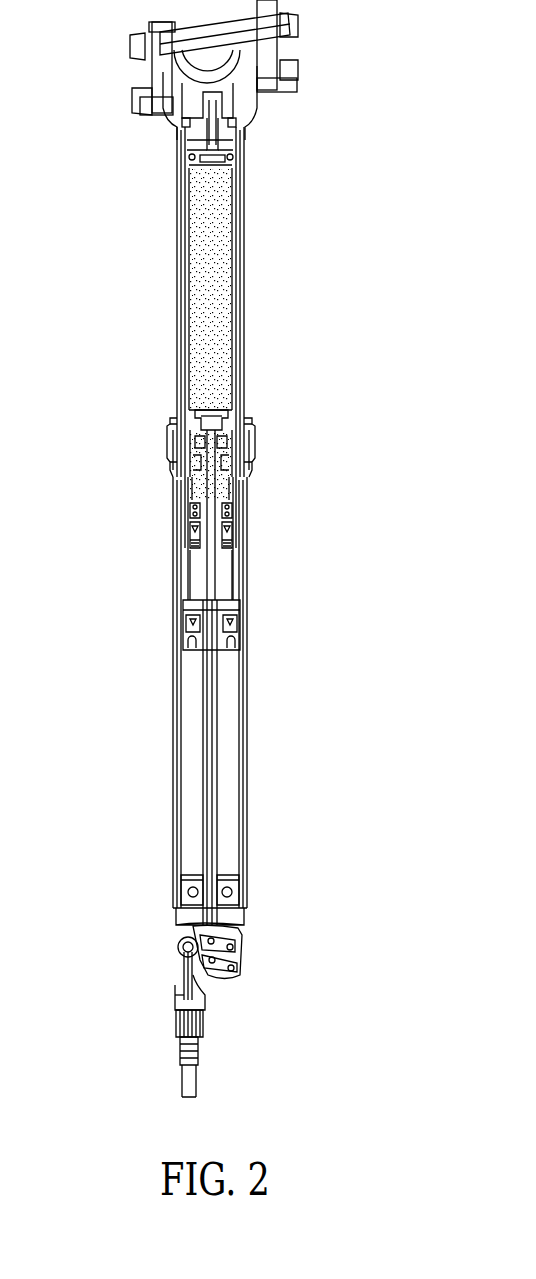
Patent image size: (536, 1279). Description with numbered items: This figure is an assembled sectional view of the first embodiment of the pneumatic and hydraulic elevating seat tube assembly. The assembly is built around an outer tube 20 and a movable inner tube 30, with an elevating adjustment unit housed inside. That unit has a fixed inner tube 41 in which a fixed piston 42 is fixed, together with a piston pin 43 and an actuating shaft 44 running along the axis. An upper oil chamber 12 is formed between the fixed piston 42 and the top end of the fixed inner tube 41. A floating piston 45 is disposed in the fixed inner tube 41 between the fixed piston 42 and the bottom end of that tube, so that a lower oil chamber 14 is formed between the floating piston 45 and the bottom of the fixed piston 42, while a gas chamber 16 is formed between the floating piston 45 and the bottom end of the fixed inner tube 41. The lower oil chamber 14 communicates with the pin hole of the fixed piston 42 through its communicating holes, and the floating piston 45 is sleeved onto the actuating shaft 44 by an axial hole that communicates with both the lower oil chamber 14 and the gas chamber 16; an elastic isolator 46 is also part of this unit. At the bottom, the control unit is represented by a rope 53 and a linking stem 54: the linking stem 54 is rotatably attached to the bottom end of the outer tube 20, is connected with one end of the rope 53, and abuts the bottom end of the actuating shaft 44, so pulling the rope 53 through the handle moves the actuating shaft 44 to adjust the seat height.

The upper oil chamber 12 is at (217, 295).
The lower oil chamber 14 is at (228, 490).
The gas chamber 16 is at (227, 588).
The outer tube 20 is at (247, 737).
The movable inner tube 30 is at (240, 213).
The fixed inner tube 41 is at (233, 250).
The fixed piston 42 is at (225, 450).
The piston pin 43 is at (210, 413).
The actuating shaft 44 is at (210, 823).
The floating piston 45 is at (230, 518).
The elastic isolator 46 is at (222, 533).
The rope 53 is at (183, 967).
The linking stem 54 is at (233, 983).